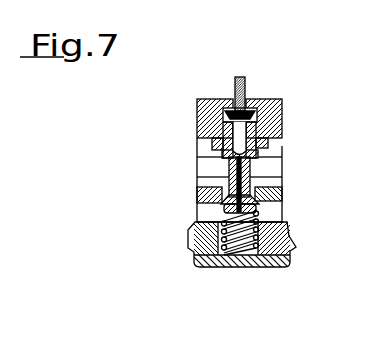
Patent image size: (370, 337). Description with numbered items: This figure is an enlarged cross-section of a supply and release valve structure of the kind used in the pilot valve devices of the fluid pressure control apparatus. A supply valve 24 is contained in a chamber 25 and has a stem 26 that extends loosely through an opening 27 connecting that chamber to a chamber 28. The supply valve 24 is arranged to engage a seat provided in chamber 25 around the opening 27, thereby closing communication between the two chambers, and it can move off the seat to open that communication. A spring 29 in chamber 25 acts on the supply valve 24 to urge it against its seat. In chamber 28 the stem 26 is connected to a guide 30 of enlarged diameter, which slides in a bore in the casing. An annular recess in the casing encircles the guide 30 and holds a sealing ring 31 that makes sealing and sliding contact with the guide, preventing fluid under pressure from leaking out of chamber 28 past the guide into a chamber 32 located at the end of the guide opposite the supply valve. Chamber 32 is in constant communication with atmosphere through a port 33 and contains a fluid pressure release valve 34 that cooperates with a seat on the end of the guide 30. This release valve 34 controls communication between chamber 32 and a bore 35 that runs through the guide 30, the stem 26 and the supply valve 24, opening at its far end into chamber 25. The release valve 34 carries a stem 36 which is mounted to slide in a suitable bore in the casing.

The supply valve 24 is at (224, 205).
The chamber 25 is at (267, 209).
The stem 26 is at (250, 169).
The opening 27 is at (256, 190).
The chamber 28 is at (221, 169).
The spring 29 is at (243, 244).
The guide 30 is at (277, 149).
The sealing ring 31 is at (216, 141).
The chamber 32 is at (273, 104).
The port 33 is at (228, 102).
The fluid pressure release valve 34 is at (253, 107).
The bore 35 is at (222, 177).
The stem 36 is at (244, 83).